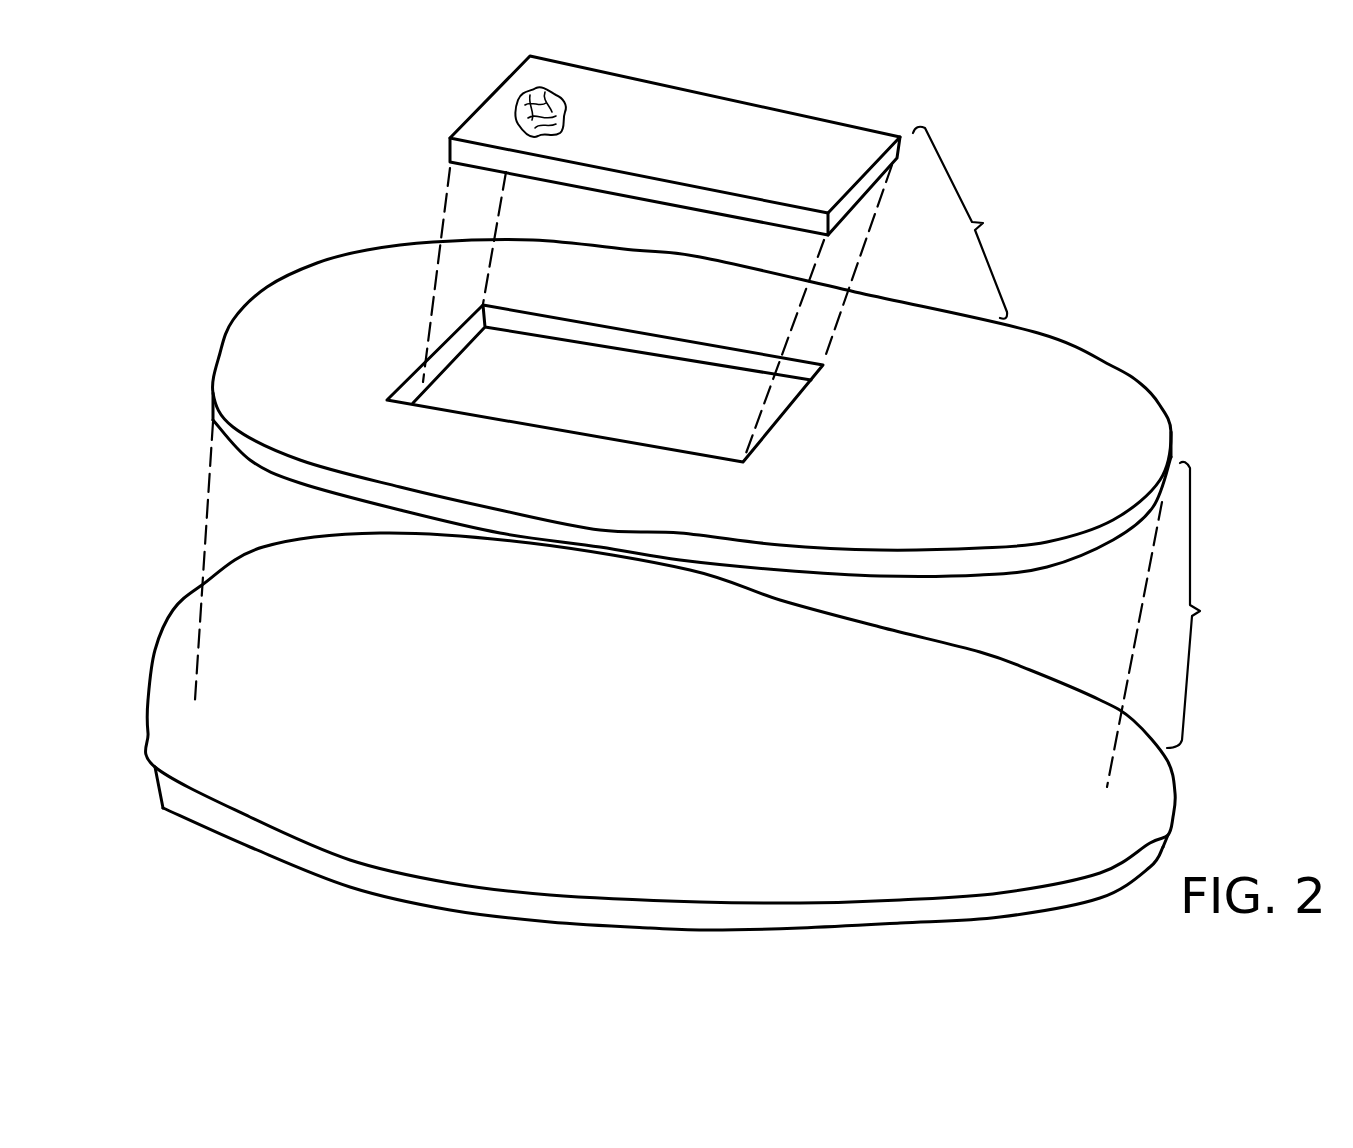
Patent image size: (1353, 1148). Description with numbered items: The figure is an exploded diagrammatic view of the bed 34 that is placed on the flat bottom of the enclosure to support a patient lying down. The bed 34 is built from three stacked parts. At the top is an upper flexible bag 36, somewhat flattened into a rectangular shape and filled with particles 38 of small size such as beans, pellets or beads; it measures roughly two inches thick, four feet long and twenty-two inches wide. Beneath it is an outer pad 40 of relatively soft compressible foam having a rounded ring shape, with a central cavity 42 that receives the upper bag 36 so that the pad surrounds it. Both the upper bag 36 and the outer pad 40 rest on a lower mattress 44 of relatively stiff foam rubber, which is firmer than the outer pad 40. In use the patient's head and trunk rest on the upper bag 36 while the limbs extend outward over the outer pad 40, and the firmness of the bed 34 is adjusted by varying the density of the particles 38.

The bed 34 is at (1175, 207).
The upper flexible bag 36 is at (803, 108).
The particles 38 is at (563, 112).
The outer pad 40 is at (1117, 368).
The central cavity 42 is at (792, 412).
The lower mattress 44 is at (997, 657).